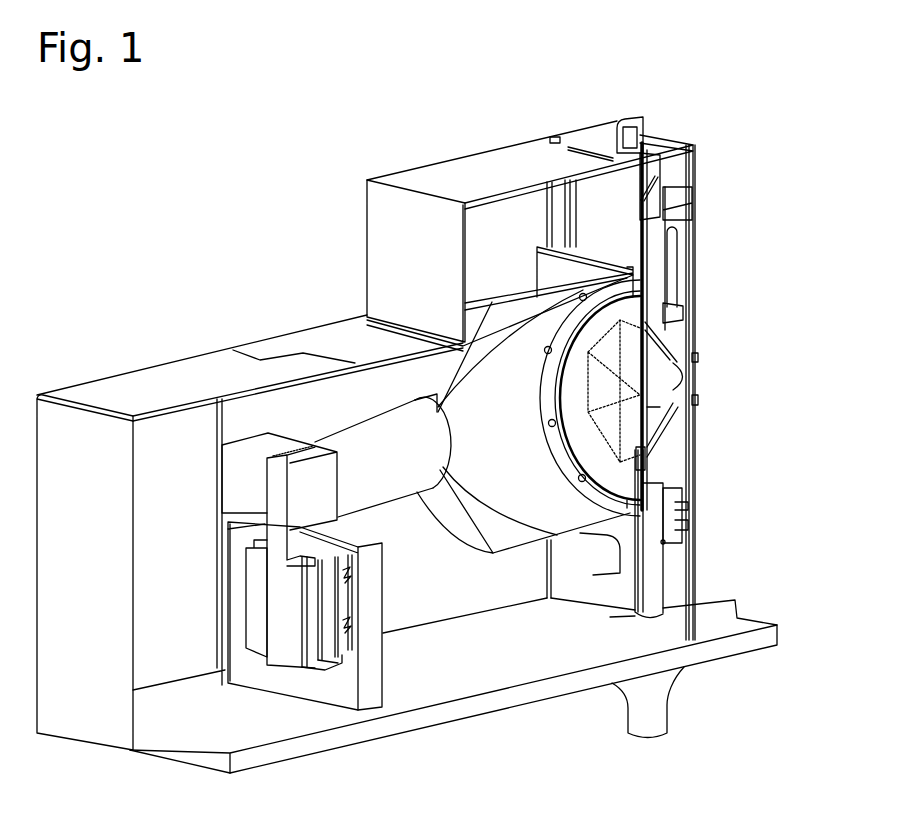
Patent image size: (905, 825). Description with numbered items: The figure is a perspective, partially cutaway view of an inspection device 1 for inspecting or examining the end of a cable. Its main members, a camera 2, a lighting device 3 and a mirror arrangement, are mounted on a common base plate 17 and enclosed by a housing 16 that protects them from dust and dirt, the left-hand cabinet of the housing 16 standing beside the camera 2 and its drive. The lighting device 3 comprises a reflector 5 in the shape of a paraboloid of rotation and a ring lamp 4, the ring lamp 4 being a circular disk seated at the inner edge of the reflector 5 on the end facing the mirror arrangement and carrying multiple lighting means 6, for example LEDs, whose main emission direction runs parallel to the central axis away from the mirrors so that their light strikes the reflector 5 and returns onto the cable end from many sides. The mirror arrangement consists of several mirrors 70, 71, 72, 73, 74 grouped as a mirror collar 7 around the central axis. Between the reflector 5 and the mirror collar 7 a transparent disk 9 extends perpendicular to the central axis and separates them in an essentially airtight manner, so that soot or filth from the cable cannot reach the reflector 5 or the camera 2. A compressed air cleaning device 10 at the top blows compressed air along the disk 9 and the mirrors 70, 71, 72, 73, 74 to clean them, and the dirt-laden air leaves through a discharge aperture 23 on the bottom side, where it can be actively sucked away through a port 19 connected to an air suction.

The inspection device 1 is at (257, 218).
The camera 2 is at (252, 440).
The lighting device 3 is at (517, 603).
The ring lamp 4 is at (623, 503).
The reflector 5 is at (528, 290).
The lighting means 6 is at (588, 297).
The mirror collar 7 is at (693, 432).
The transparent disk 9 is at (647, 452).
The compressed air cleaning device 10 is at (630, 120).
The housing 16 is at (98, 385).
The base plate 17 is at (292, 722).
The port 19 is at (657, 722).
The discharge aperture 23 is at (712, 612).
The mirror 70 is at (653, 415).
The mirror 71 is at (660, 420).
The mirror 72 is at (666, 388).
The mirror 73 is at (670, 378).
The mirror 74 is at (653, 340).